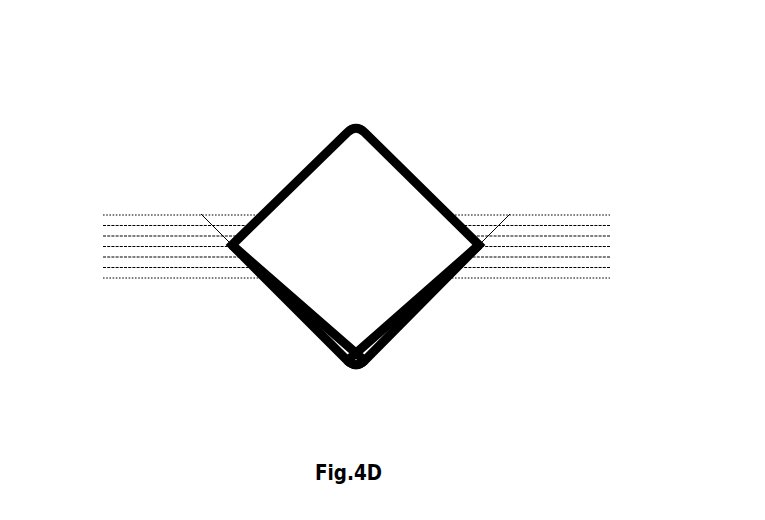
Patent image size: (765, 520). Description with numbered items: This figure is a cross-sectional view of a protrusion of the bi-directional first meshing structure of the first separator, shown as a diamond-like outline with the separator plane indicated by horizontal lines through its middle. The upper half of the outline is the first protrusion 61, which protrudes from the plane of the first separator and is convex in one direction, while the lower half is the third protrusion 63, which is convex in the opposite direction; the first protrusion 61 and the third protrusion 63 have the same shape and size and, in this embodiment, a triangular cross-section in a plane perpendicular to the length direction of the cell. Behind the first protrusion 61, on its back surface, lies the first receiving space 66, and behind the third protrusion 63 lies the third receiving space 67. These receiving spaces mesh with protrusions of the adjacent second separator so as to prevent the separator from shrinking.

The first protrusion 61 is at (272, 213).
The third protrusion 63 is at (419, 335).
The first receiving space 66 is at (357, 190).
The third receiving space 67 is at (426, 250).